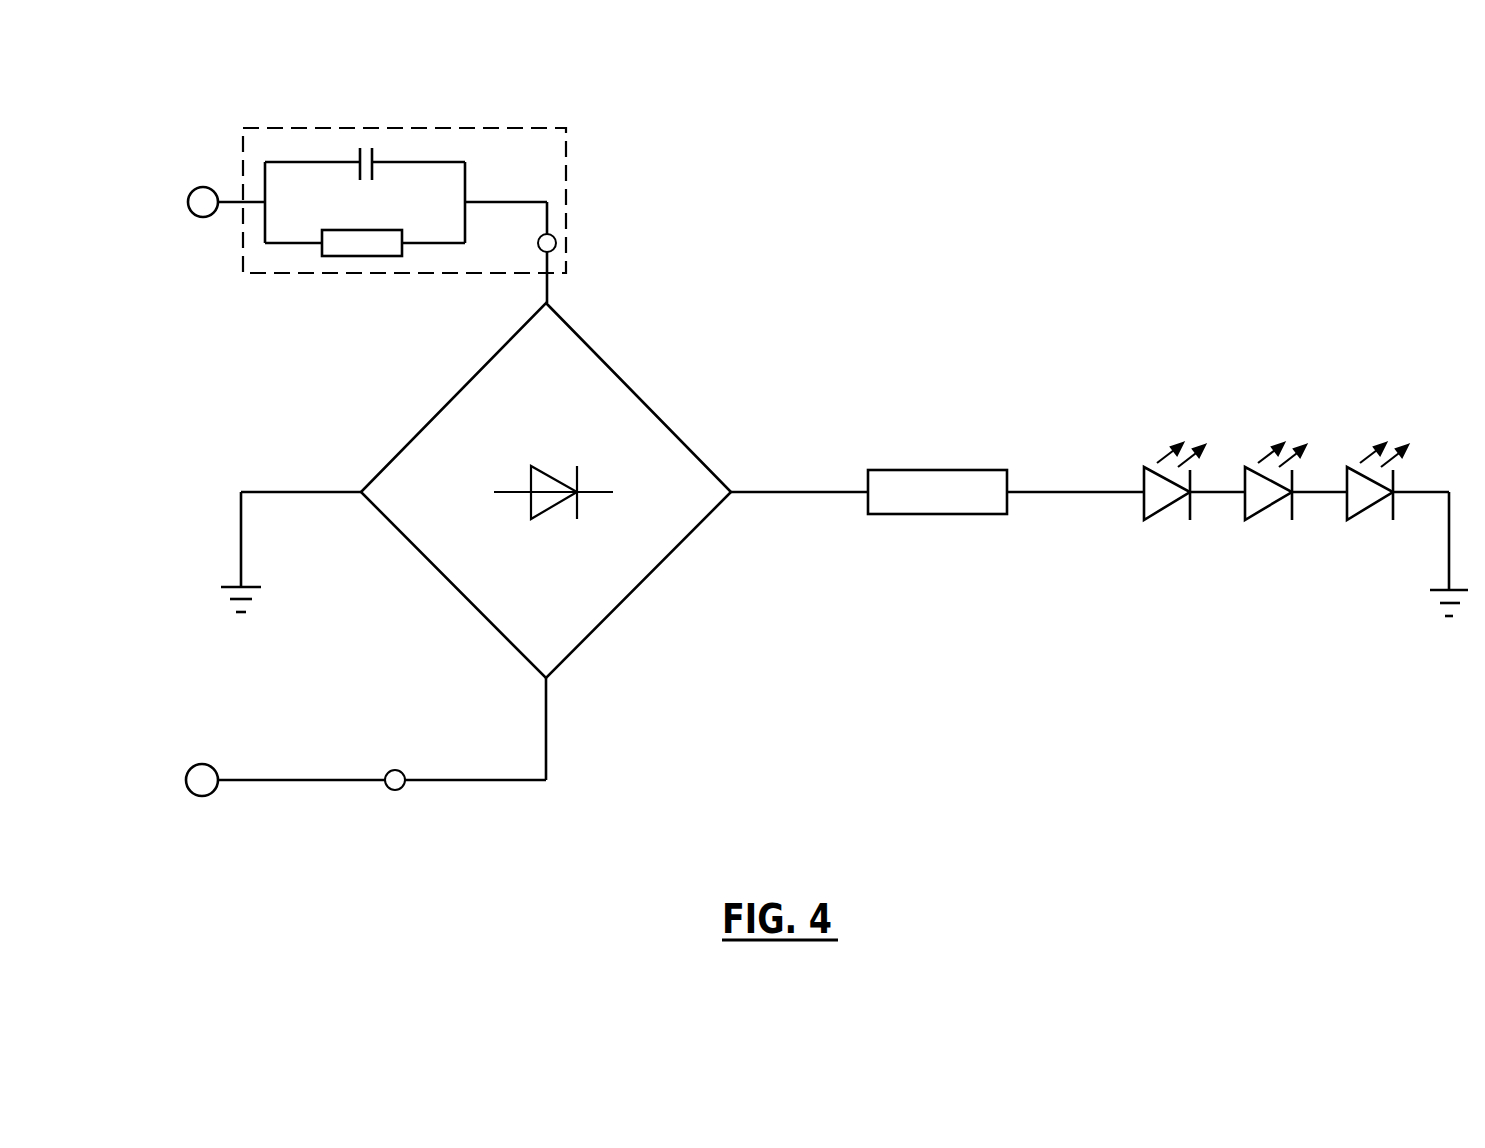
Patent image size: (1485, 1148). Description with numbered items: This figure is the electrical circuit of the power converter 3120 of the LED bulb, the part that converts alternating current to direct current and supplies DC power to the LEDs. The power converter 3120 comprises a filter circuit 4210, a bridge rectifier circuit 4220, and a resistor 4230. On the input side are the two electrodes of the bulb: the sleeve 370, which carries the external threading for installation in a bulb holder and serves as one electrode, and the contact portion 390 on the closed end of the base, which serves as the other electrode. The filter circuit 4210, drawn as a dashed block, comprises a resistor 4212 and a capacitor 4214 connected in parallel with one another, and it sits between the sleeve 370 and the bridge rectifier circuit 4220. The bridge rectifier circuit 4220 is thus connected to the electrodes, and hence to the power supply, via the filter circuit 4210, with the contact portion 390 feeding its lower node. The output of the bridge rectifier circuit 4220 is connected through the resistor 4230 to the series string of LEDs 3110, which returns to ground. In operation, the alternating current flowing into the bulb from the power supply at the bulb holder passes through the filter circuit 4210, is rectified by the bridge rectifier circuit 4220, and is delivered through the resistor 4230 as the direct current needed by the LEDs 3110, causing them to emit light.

The power converter 3120 is at (1038, 240).
The filter circuit 4210 is at (568, 212).
The capacitor 4214 is at (374, 156).
The resistor 4212 is at (362, 257).
The sleeve 370 is at (203, 218).
The contact portion 390 is at (185, 780).
The bridge rectifier circuit 4220 is at (631, 385).
The resistor 4230 is at (913, 470).
The LEDs 3110 is at (1370, 443).